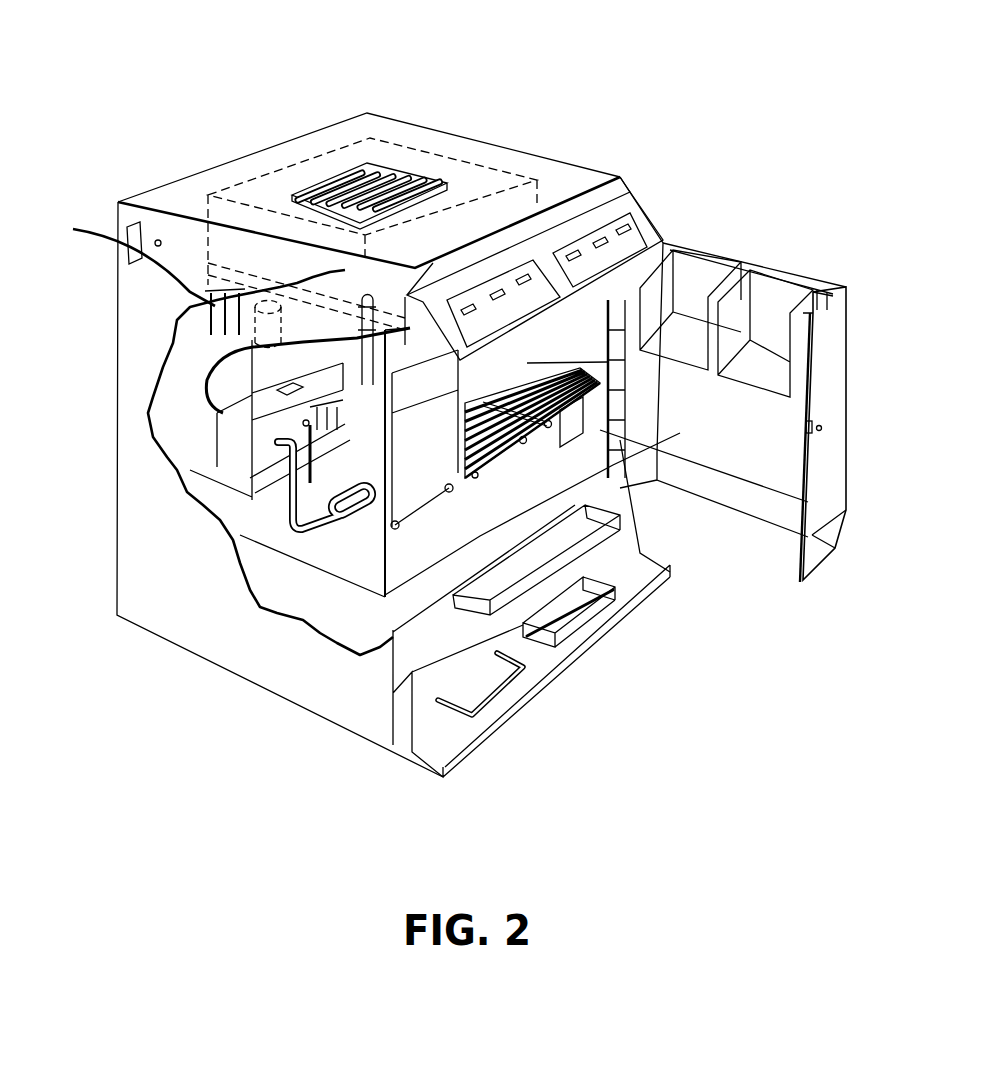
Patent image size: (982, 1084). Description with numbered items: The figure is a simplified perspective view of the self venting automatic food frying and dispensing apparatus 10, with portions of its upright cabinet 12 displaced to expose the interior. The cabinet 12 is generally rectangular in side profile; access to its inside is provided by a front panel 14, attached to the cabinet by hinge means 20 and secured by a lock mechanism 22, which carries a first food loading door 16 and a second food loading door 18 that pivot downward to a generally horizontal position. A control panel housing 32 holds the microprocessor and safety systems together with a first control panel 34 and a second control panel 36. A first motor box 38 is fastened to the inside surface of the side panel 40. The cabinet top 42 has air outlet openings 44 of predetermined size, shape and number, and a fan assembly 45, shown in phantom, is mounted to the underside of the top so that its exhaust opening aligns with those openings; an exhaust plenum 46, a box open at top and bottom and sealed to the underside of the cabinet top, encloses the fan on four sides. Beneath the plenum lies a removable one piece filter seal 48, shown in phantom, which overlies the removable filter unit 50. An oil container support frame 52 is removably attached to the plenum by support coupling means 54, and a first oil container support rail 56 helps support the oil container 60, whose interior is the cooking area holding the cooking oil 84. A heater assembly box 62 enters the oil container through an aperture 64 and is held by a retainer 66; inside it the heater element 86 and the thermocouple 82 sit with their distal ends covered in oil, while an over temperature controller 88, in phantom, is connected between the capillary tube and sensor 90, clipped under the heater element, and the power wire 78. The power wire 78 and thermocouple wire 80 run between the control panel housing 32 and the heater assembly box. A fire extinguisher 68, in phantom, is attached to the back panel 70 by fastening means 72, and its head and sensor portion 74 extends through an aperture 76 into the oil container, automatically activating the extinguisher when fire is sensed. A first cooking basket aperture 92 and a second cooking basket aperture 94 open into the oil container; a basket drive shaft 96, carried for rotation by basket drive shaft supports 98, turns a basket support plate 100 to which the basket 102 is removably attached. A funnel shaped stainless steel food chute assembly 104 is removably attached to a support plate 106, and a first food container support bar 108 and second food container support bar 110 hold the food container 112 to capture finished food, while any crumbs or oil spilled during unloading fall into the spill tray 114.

The self venting automatic food frying and dispensing apparatus 10 is at (330, 113).
The upright cabinet 12 is at (140, 542).
The front panel 14 is at (785, 412).
The first food loading door 16 is at (800, 277).
The second food loading door 18 is at (780, 287).
The hinge means 20 is at (703, 272).
The lock mechanism 22 is at (822, 428).
The control panel housing 32 is at (568, 242).
The first control panel 34 is at (537, 287).
The second control panel 36 is at (613, 250).
The first motor box 38 is at (655, 458).
The side panel 40 is at (573, 477).
The cabinet top 42 is at (396, 134).
The air outlet openings 44 is at (385, 178).
The fan assembly 45 is at (495, 180).
The exhaust plenum 46 is at (237, 223).
The filter seal 48 is at (205, 250).
The removable filter unit 50 is at (225, 305).
The oil container support frame 52 is at (195, 333).
The support coupling means 54 is at (129, 260).
The first oil container support rail 56 is at (203, 347).
The oil container 60 is at (452, 537).
The heater assembly box 62 is at (233, 463).
The aperture 64 is at (277, 440).
The retainer 66 is at (365, 447).
The fire extinguisher 68 is at (190, 305).
The back panel 70 is at (150, 412).
The fastening means 72 is at (225, 328).
The head and sensor portion 74 is at (270, 440).
The aperture 76 is at (222, 402).
The power wire 78 is at (207, 372).
The thermocouple wire 80 is at (280, 383).
The thermocouple 82 is at (217, 495).
The cooking oil 84 is at (250, 576).
The heater element 86 is at (343, 548).
The over temperature controller 88 is at (380, 417).
The capillary tube and sensor 90 is at (258, 515).
The first cooking basket aperture 92 is at (440, 440).
The second cooking basket aperture 94 is at (560, 368).
The basket drive shaft 96 is at (548, 428).
The basket drive shaft supports 98 is at (523, 444).
The basket support plate 100 is at (600, 395).
The basket 102 is at (615, 380).
The food chute assembly 104 is at (568, 533).
The support plate 106 is at (403, 673).
The first food container support bar 108 is at (513, 687).
The second food container support bar 110 is at (613, 592).
The food container 112 is at (593, 588).
The spill tray 114 is at (470, 725).